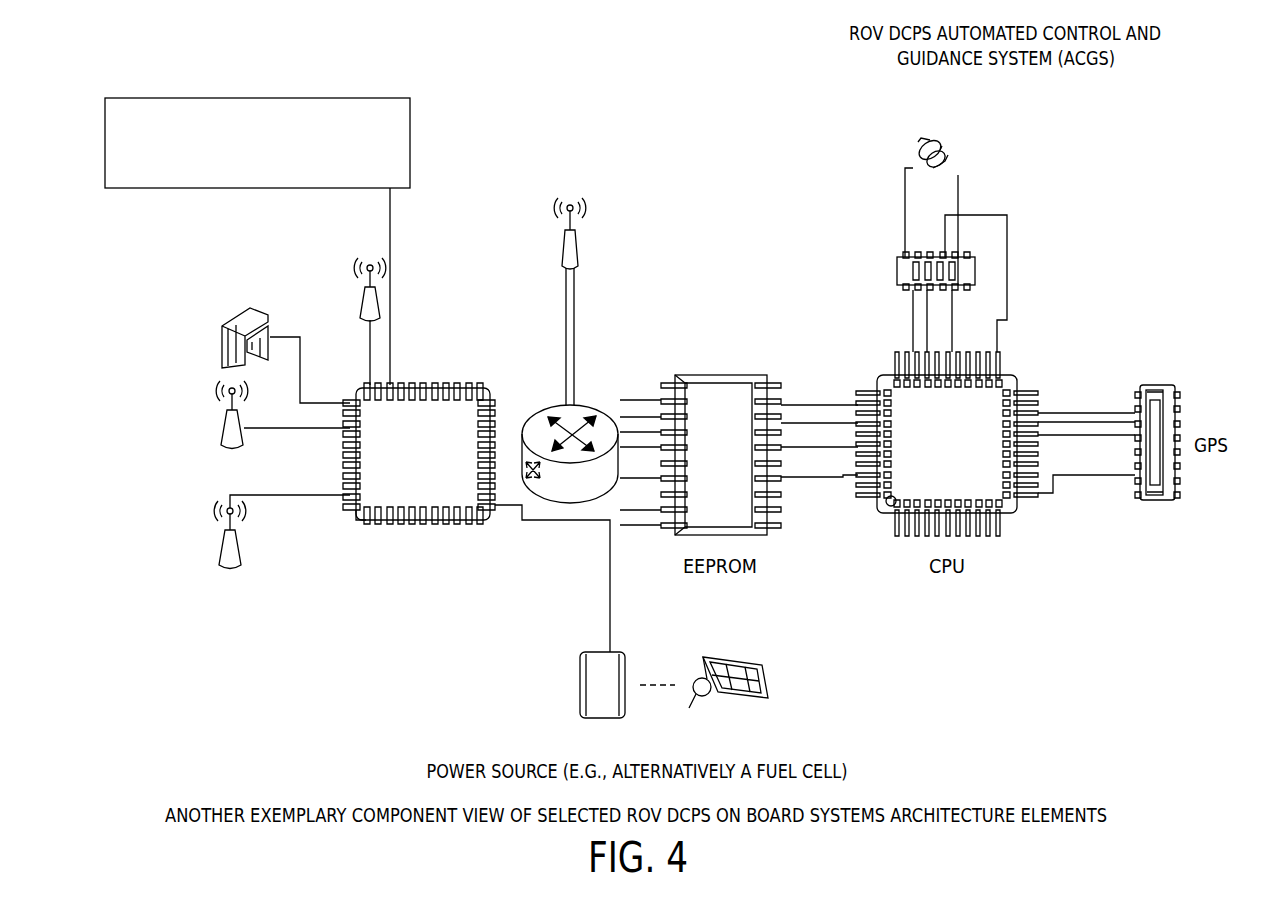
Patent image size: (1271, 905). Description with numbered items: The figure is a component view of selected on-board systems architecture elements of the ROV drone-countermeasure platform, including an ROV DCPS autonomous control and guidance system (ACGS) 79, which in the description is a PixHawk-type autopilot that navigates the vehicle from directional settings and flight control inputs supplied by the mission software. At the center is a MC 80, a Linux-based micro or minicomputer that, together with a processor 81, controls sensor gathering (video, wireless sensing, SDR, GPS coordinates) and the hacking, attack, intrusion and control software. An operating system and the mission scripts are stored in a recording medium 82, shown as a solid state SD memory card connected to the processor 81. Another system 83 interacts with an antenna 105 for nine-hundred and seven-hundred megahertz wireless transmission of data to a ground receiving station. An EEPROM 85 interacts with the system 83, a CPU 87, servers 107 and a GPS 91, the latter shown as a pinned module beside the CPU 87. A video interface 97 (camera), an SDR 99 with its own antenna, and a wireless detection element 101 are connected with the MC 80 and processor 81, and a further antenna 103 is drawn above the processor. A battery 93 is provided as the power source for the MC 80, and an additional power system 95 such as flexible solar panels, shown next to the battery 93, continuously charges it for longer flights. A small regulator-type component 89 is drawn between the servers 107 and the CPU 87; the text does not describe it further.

The ROV DCPS autonomous control and guidance system (ACGS) 79 is at (1013, 165).
The MC 80 is at (357, 526).
The processor 81 is at (433, 408).
The recording medium 82 is at (380, 172).
The system 83 is at (556, 400).
The EEPROM 85 is at (718, 386).
The CPU 87 is at (886, 383).
The voltage regulator 89 is at (897, 271).
The GPS 91 is at (1155, 387).
The battery 93 is at (578, 692).
The solar charger 95 is at (749, 667).
The video interface 97 is at (222, 330).
The SDR 99 is at (226, 425).
The wireless detection 101 is at (222, 549).
The wireless antenna 103 is at (364, 304).
The antenna 105 is at (580, 253).
The servers 107 is at (916, 147).